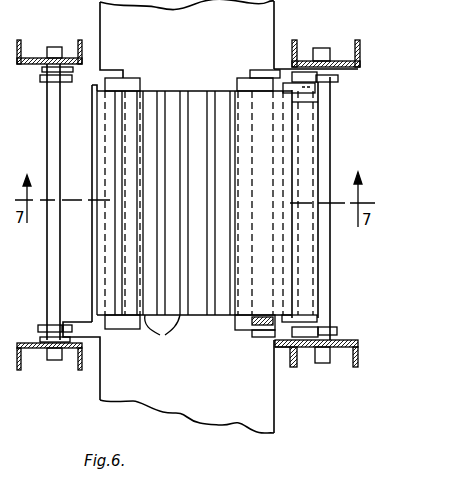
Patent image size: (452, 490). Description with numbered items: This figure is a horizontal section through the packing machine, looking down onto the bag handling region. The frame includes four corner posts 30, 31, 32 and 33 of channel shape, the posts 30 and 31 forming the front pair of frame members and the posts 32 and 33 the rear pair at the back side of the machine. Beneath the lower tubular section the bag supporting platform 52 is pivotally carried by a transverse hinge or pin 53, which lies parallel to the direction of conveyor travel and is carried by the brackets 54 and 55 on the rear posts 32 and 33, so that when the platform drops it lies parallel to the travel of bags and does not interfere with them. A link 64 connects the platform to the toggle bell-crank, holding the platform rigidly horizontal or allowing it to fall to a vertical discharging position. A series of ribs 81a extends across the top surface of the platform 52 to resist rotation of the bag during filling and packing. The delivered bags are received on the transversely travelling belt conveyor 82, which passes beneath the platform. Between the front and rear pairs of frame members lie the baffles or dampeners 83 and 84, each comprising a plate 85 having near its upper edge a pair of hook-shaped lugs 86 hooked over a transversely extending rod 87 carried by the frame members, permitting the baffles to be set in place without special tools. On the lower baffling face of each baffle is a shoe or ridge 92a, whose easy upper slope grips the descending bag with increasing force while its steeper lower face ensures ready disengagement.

The corner post 30 is at (33, 29).
The corner post 31 is at (22, 370).
The corner post 32 is at (353, 368).
The corner post 33 is at (358, 47).
The bag supporting platform 52 is at (199, 91).
The transverse hinge or pin 53 is at (308, 272).
The bracket 54 is at (283, 348).
The bracket 55 is at (277, 63).
The link 64 is at (250, 327).
The ribs 81a is at (191, 345).
The belt conveyor 82 is at (210, 216).
The baffle or dampener 83 is at (90, 293).
The baffle or dampener 84 is at (255, 337).
The plate 85 is at (253, 70).
The hook-shaped lugs 86 is at (40, 78).
The transversely extending rod 87 is at (50, 133).
The shoe or ridge 92a is at (135, 87).